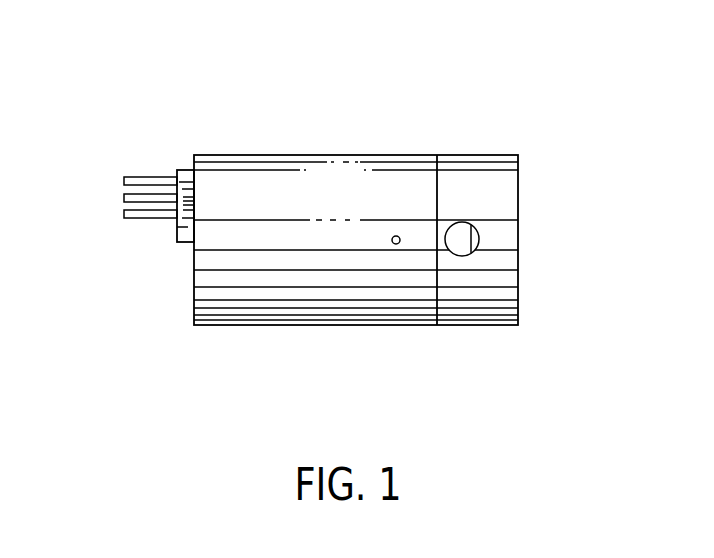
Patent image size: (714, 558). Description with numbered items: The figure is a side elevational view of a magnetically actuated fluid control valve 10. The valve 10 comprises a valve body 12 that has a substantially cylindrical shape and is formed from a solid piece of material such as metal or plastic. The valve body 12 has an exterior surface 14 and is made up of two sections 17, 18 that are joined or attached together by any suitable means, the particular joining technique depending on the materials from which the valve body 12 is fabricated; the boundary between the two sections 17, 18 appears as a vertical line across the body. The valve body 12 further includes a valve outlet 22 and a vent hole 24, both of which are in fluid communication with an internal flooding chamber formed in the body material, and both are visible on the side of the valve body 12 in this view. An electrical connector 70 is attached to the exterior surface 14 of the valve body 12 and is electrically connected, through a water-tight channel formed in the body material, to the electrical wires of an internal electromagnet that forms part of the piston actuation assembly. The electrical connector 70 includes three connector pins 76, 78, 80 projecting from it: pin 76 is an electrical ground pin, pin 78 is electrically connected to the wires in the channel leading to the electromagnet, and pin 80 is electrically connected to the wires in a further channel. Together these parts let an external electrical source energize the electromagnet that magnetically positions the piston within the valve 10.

The magnetically actuated fluid control valve 10 is at (492, 110).
The valve body 12 is at (365, 155).
The exterior surface 14 is at (259, 193).
The valve body section 17 is at (490, 327).
The valve body section 18 is at (280, 326).
The valve outlet 22 is at (479, 237).
The vent hole 24 is at (396, 244).
The electrical connector 70 is at (184, 243).
The connector pin 76 is at (130, 219).
The connector pin 78 is at (123, 198).
The connector pin 80 is at (138, 177).